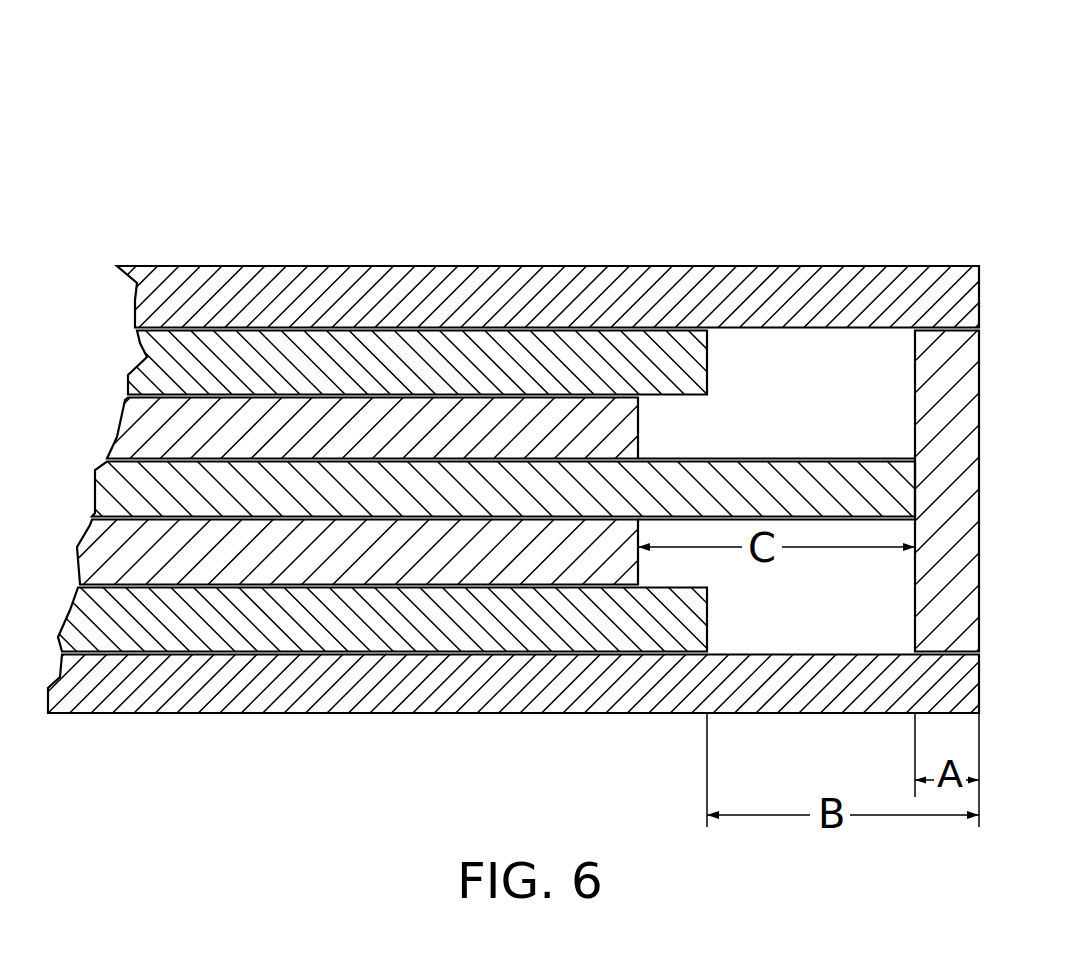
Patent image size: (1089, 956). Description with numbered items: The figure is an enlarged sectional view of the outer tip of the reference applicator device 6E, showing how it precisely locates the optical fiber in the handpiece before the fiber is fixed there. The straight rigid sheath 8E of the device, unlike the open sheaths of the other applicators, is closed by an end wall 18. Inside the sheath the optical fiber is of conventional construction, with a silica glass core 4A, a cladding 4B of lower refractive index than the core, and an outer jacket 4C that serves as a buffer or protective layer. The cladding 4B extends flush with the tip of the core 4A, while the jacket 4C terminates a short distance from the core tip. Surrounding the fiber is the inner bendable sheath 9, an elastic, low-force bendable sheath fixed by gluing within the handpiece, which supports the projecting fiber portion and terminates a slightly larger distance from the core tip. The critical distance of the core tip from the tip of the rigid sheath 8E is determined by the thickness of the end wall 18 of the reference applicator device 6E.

The reference applicator device 6E is at (266, 125).
The straight rigid sheath 8E is at (590, 278).
The outer jacket 4C is at (260, 357).
The inner bendable sheath 9 is at (365, 423).
The core 4A is at (870, 487).
The cladding 4B is at (853, 457).
The end wall 18 is at (950, 565).